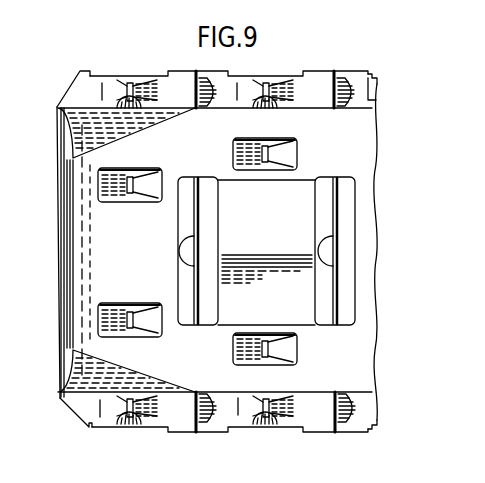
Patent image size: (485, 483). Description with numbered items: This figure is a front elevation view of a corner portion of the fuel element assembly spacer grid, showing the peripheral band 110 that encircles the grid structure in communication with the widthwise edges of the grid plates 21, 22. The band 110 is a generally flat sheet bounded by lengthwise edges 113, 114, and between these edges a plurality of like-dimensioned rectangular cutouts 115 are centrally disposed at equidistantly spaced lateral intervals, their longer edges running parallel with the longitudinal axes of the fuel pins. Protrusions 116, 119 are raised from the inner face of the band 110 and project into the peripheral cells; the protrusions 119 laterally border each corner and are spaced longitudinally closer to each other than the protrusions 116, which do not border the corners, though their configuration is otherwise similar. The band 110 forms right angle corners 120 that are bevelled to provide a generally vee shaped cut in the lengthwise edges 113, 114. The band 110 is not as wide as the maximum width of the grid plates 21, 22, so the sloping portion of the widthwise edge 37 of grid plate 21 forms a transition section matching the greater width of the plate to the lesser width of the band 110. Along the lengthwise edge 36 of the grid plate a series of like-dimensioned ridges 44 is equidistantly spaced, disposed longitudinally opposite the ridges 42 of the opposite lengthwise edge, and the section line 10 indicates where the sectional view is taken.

The section line 10 is at (303, 32).
The grid plate 21 is at (82, 71).
The grid plate 22 is at (192, 73).
The lengthwise edge 36 is at (370, 80).
The widthwise edge 37 is at (70, 88).
The ridge 42 is at (341, 71).
The ridge 44 is at (356, 72).
The peripheral band 110 is at (80, 224).
The lengthwise edge 113 is at (375, 398).
The lengthwise edge 114 is at (378, 104).
The rectangular cutout 115 is at (216, 255).
The protrusion 116 is at (287, 166).
The protrusion 119 is at (153, 206).
The right angle corner 120 is at (70, 135).